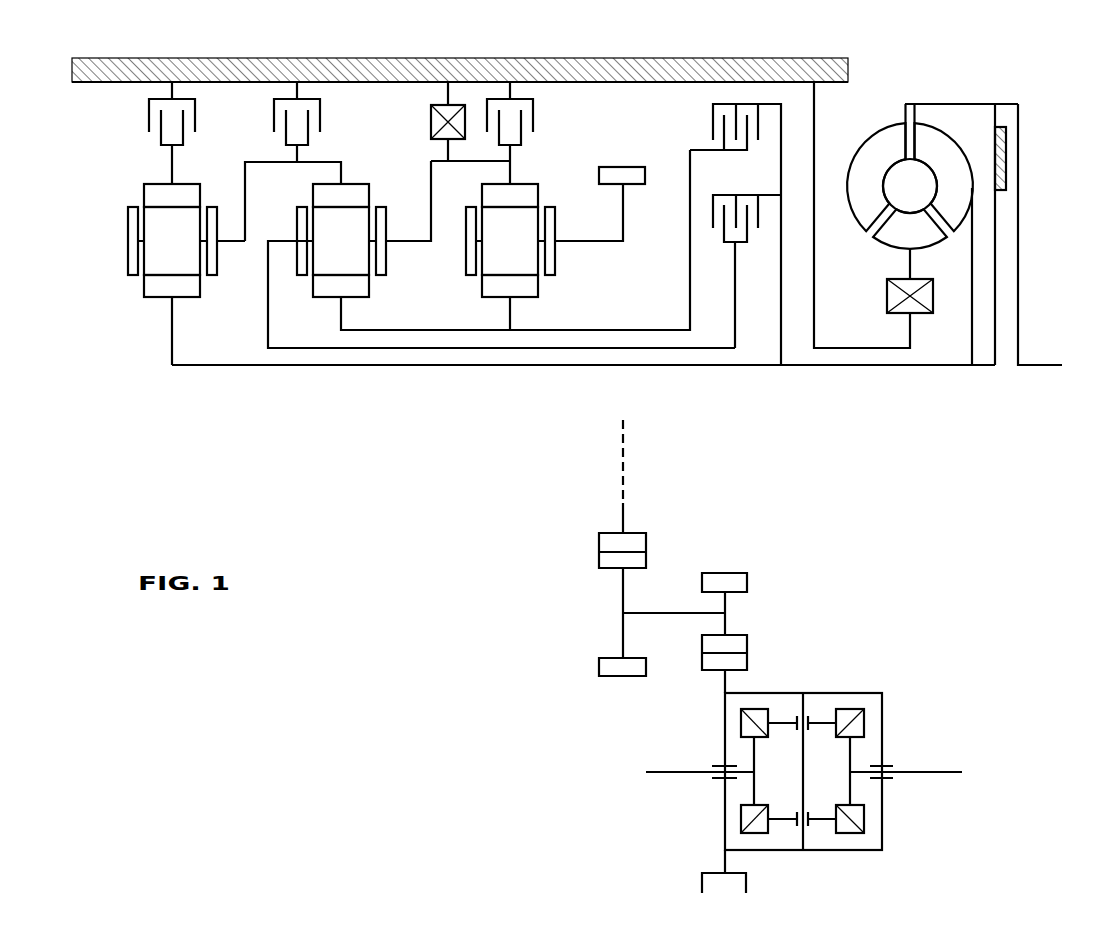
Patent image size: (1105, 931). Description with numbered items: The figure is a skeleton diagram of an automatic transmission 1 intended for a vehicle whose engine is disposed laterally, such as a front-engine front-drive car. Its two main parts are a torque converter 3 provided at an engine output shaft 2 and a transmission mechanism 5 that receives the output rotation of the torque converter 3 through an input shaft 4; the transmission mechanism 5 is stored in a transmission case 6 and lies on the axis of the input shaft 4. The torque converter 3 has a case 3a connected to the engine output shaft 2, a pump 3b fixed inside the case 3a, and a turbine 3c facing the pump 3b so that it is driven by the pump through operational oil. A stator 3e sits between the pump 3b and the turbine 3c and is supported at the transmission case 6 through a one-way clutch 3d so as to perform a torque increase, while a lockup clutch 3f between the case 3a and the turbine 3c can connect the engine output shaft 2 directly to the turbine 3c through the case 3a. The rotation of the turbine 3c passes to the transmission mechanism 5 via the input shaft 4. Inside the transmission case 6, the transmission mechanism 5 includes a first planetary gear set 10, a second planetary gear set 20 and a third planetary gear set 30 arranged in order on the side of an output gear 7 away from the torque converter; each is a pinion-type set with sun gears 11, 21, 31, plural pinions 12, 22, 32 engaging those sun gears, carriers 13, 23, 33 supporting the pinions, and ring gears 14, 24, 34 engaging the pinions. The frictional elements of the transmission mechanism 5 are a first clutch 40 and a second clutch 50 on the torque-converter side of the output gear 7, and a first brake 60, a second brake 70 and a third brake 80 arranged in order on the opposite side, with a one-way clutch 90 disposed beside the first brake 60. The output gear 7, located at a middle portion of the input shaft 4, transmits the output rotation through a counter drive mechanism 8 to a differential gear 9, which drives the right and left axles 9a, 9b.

The automatic transmission 1 is at (1018, 70).
The engine output shaft 2 is at (1032, 363).
The torque converter 3 is at (934, 200).
The case 3a is at (935, 103).
The pump 3b is at (862, 140).
The turbine 3c is at (950, 133).
The one-way clutch 3d is at (933, 303).
The stator 3e is at (930, 250).
The lockup clutch 3f is at (1006, 158).
The input shaft 4 is at (803, 366).
The transmission mechanism 5 is at (738, 381).
The transmission case 6 is at (763, 63).
The output gear 7 is at (633, 167).
The counter drive mechanism 8 is at (730, 554).
The differential gear 9 is at (835, 670).
The axle 9a is at (662, 775).
The axle 9b is at (940, 775).
The first planetary gear set 10 is at (504, 229).
The sun gear 11 is at (495, 297).
The pinion 12 is at (497, 260).
The carrier 13 is at (465, 247).
The ring gear 14 is at (482, 195).
The second planetary gear set 20 is at (328, 236).
The sun gear 21 is at (327, 293).
The pinion 22 is at (323, 258).
The carrier 23 is at (297, 257).
The ring gear 24 is at (312, 195).
The third planetary gear set 30 is at (170, 235).
The sun gear 31 is at (165, 288).
The pinion 32 is at (157, 252).
The carrier 33 is at (128, 248).
The ring gear 34 is at (143, 193).
The first clutch 40 is at (738, 152).
The second clutch 50 is at (750, 232).
The first brake 60 is at (538, 115).
The second brake 70 is at (320, 115).
The third brake 80 is at (197, 115).
The one-way clutch 90 is at (432, 123).